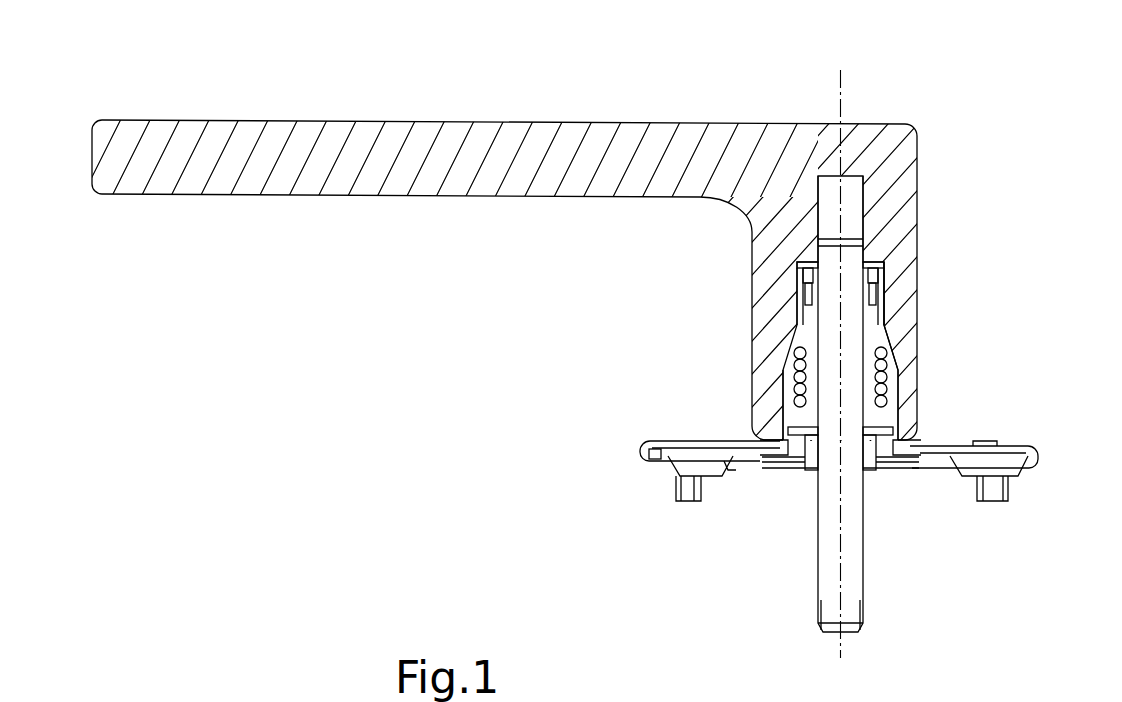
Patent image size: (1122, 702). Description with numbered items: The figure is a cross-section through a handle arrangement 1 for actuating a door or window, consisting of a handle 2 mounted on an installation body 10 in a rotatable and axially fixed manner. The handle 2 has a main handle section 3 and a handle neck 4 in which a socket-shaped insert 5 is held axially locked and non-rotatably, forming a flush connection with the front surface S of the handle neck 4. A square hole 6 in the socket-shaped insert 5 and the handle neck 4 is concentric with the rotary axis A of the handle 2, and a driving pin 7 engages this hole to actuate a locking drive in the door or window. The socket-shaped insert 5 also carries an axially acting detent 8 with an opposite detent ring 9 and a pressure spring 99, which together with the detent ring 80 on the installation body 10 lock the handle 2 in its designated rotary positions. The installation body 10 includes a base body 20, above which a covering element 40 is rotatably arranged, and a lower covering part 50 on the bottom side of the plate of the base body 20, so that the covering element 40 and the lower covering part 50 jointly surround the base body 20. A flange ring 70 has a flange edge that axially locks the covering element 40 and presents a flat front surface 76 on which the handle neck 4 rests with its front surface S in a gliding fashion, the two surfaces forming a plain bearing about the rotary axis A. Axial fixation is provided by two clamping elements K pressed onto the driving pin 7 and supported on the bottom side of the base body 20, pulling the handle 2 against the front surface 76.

The handle arrangement 1 is at (1073, 66).
The handle 2 is at (510, 112).
The main handle section 3 is at (330, 145).
The handle neck 4 is at (908, 316).
The socket-shaped insert 5 is at (884, 268).
The square hole 6 is at (858, 197).
The driving pin 7 is at (830, 603).
The axially acting detent 8 is at (912, 378).
The opposite detent ring 9 is at (893, 417).
The installation body 10 is at (978, 533).
The base body 20 is at (742, 470).
The covering element 40 is at (683, 440).
The lower covering part 50 is at (767, 470).
The flange ring 70 is at (767, 437).
The front surface 76 is at (913, 470).
The detent ring 80 is at (883, 468).
The pressure spring 99 is at (922, 355).
The rotary axis A is at (841, 88).
The front surface S is at (759, 380).
The clamping element K is at (810, 467).